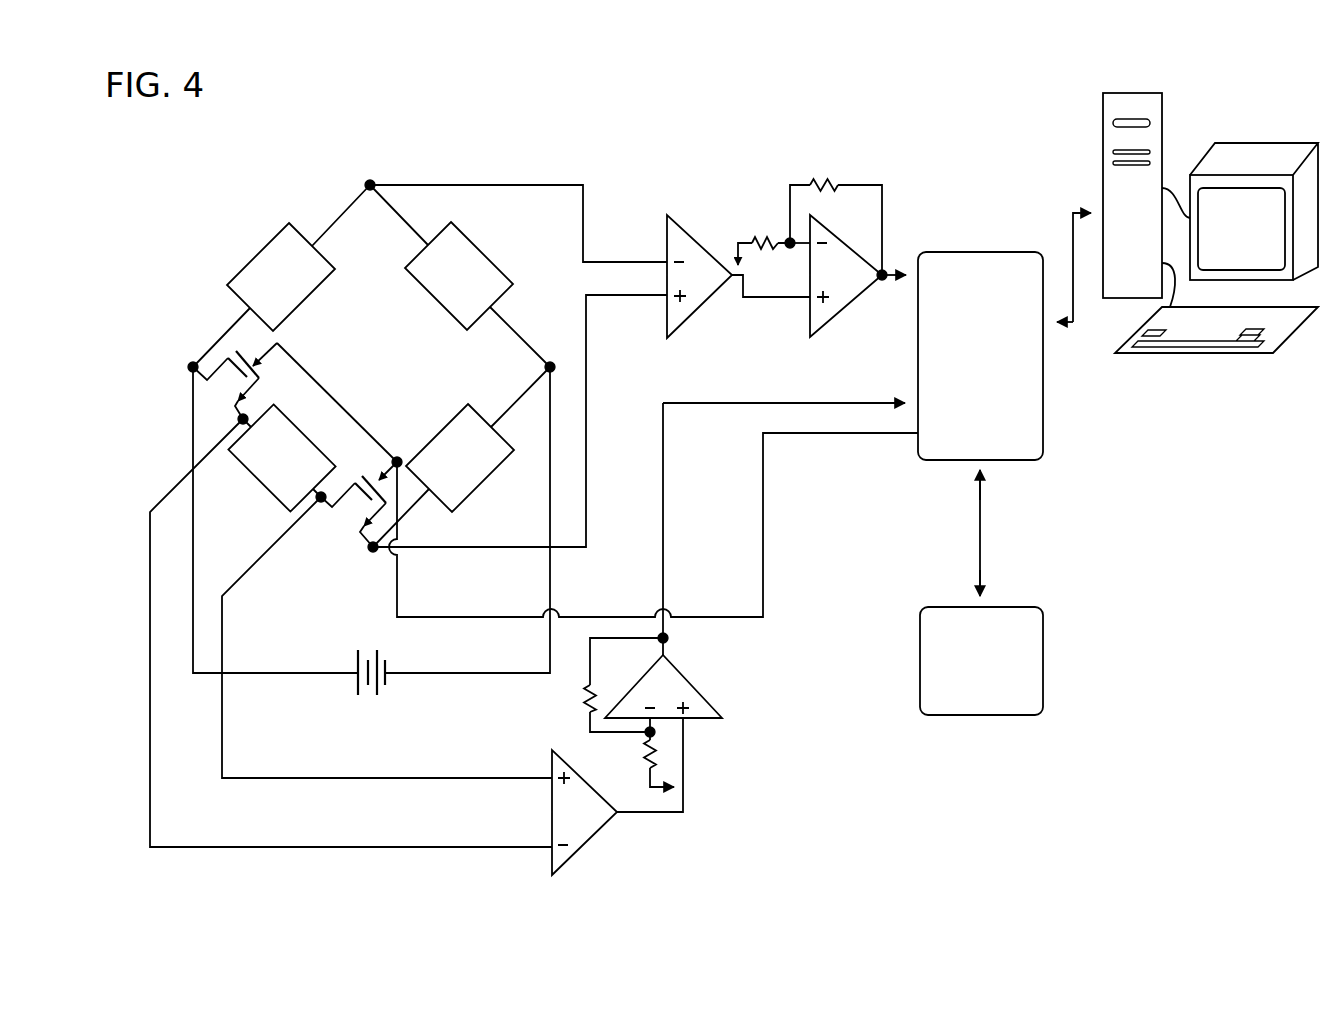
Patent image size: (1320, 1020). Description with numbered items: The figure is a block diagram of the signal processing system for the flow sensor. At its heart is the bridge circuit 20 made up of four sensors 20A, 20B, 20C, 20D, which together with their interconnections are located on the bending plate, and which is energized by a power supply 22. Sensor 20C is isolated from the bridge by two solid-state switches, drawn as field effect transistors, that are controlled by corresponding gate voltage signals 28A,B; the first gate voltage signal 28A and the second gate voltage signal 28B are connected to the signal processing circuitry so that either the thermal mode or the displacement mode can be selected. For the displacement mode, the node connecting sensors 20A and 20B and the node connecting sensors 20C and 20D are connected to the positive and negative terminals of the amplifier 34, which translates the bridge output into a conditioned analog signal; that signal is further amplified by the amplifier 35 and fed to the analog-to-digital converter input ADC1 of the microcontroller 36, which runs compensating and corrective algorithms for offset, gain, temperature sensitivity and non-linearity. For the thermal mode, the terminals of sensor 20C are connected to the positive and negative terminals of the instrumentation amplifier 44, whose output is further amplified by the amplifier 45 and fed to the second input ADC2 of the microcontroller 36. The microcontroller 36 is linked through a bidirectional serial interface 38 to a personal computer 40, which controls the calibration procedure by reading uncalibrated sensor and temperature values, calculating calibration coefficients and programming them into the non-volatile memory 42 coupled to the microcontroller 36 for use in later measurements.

The bridge circuit 20 is at (222, 226).
The sensor 20A is at (475, 247).
The sensor 20B is at (228, 288).
The sensor 20C is at (272, 497).
The sensor 20D is at (487, 478).
The gate voltage signals 28A,B is at (318, 378).
The gate voltage signal 28A is at (235, 381).
The gate voltage signal 28B is at (359, 504).
The power supply 22 is at (376, 690).
The amplifier 34 is at (705, 243).
The amplifier 35 is at (847, 307).
The microcontroller 36 is at (980, 252).
The bidirectional serial interface 38 is at (1068, 248).
The personal computer 40 is at (1162, 135).
The non-volatile memory 42 is at (1020, 607).
The instrumentation amplifier 44 is at (592, 838).
The amplifier 45 is at (702, 688).